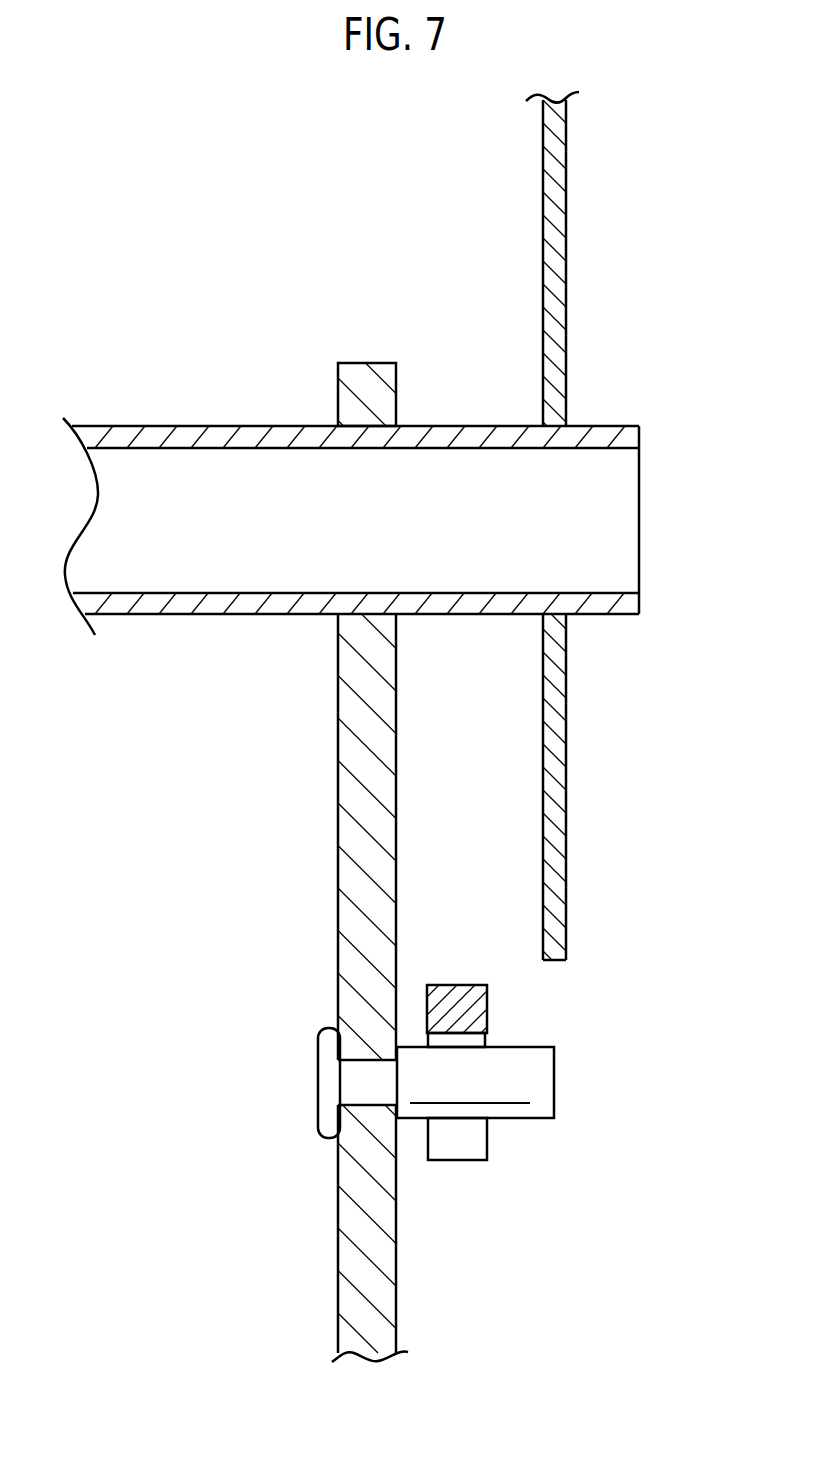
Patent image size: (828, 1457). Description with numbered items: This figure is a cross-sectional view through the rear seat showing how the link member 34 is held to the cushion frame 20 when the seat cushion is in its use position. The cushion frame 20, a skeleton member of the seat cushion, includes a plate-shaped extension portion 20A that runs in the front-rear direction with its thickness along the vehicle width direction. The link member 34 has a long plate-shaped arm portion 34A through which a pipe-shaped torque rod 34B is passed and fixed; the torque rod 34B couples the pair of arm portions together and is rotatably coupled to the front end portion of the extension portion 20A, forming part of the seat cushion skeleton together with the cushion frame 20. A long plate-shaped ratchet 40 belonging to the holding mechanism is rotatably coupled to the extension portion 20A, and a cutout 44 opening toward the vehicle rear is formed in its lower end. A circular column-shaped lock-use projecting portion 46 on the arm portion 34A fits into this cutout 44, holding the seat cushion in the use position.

The cushion frame 20 is at (566, 764).
The extension portion 20A is at (566, 250).
The link member 34 is at (351, 862).
The arm portion 34A is at (338, 785).
The torque rod 34B is at (205, 426).
The ratchet 40 is at (487, 1008).
The cutout 44 is at (472, 1143).
The lock-use projecting portion 46 is at (554, 1082).